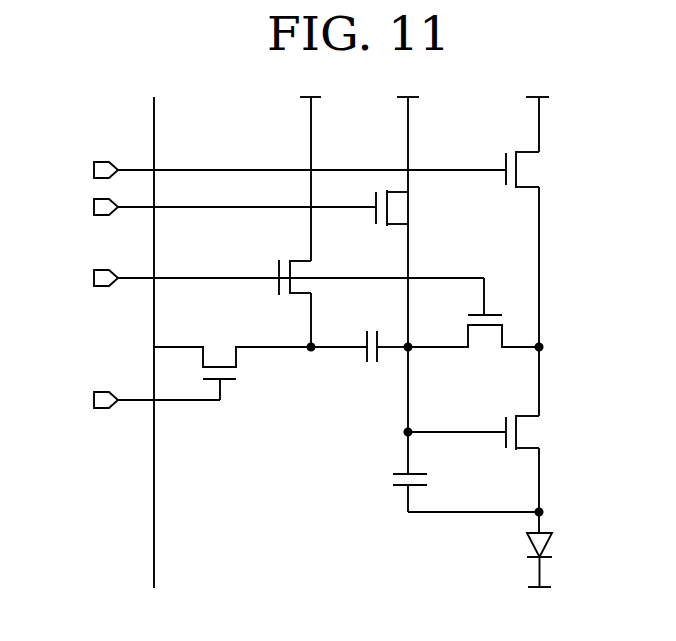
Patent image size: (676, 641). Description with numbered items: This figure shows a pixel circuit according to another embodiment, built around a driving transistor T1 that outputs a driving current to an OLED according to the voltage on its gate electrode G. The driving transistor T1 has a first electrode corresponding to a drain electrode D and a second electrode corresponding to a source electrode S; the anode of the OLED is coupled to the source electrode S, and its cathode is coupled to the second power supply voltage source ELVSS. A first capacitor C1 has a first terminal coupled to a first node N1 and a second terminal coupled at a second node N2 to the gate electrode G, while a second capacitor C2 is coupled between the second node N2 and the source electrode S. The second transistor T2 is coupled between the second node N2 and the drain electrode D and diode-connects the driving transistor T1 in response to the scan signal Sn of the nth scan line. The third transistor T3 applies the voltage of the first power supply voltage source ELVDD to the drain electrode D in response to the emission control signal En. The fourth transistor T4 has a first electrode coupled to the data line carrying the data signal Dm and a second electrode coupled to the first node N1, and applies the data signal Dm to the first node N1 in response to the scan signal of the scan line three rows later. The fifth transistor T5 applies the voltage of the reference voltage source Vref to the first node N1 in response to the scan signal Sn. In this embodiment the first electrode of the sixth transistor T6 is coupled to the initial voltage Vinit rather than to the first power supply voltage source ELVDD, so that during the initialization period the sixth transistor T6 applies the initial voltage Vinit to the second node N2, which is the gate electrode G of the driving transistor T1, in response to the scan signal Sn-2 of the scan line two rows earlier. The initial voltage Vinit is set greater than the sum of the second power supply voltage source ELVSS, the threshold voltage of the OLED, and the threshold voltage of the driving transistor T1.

The data signal Dm is at (160, 327).
The reference voltage source Vref is at (313, 206).
The initial voltage Vinit is at (408, 289).
The first power supply voltage source ELVDD is at (536, 299).
The second power supply voltage source ELVSS is at (536, 606).
The emission control signal En is at (283, 170).
The scan signal of the (n-2)th scan line Sn-2 is at (205, 208).
The scan signal of the nth scan line Sn is at (272, 290).
The driving transistor T1 is at (535, 432).
The second transistor T2 is at (473, 347).
The third transistor T3 is at (535, 169).
The fourth transistor T4 is at (232, 350).
The fifth transistor T5 is at (311, 275).
The sixth transistor T6 is at (406, 208).
The first capacitor C1 is at (359, 365).
The second capacitor C2 is at (448, 491).
The first node N1 is at (327, 334).
The second node N2 is at (422, 334).
The gate electrode G is at (455, 423).
The drain electrode D is at (549, 366).
The source electrode S is at (548, 493).
The element OLED is at (504, 560).